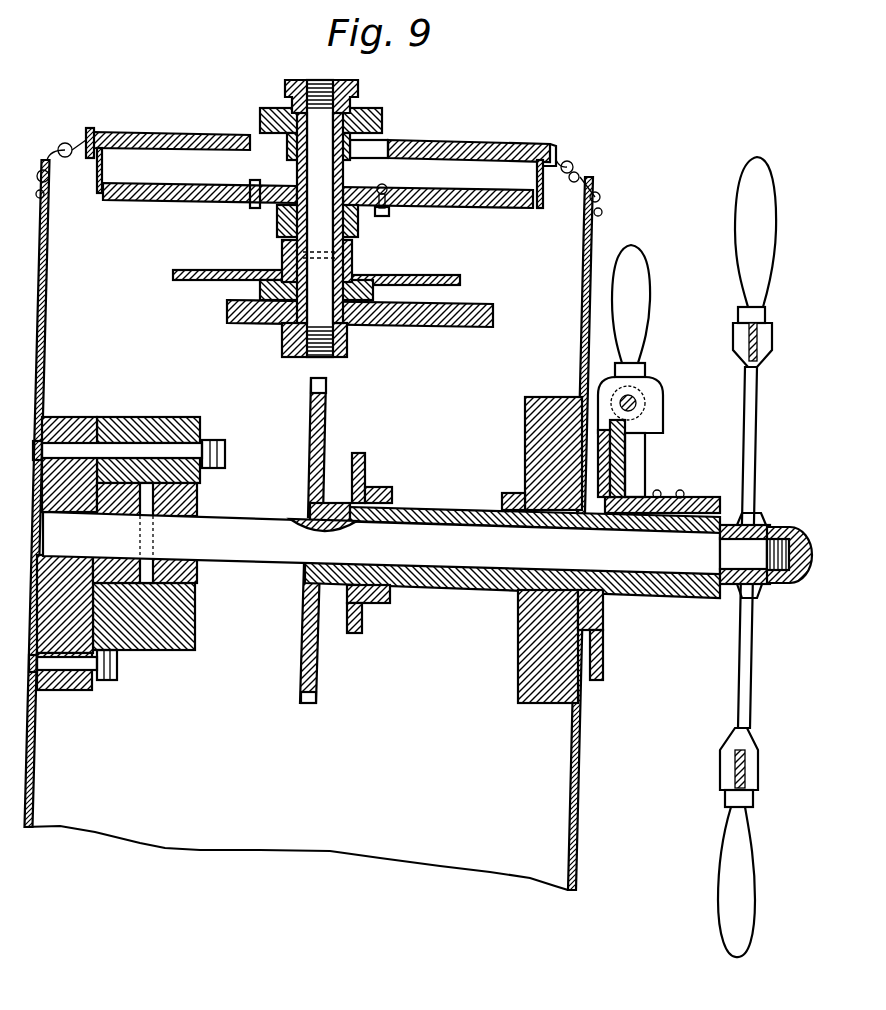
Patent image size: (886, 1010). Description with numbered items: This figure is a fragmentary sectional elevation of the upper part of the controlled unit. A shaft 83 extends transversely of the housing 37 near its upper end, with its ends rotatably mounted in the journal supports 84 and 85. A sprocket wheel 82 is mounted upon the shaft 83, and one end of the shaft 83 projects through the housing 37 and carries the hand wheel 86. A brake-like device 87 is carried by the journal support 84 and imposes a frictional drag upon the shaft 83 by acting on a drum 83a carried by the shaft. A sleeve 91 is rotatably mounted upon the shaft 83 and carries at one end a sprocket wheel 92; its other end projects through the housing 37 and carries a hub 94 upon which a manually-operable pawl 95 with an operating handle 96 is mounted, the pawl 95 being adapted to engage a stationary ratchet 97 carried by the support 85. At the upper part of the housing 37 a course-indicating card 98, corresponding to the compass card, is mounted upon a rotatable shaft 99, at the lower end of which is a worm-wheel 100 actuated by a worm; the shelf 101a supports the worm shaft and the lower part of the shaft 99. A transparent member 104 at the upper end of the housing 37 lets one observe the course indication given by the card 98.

The housing 37 is at (582, 770).
The sprocket wheel 82 is at (302, 665).
The shaft 83 is at (243, 519).
The drum 83a is at (200, 497).
The journal support 84 is at (127, 541).
The journal support 85 is at (527, 445).
The hand wheel 86 is at (736, 219).
The brake-like device 87 is at (158, 420).
The sleeve 91 is at (445, 498).
The sprocket wheel 92 is at (367, 468).
The hub 94 is at (703, 499).
The manually-operable pawl 95 is at (617, 382).
The operating handle 96 is at (648, 291).
The stationary ratchet 97 is at (605, 664).
The course-indicating card 98 is at (472, 208).
The rotatable shaft 99 is at (320, 223).
The worm-wheel 100 is at (400, 277).
The shelf 101a is at (487, 308).
The transparent member 104 is at (453, 143).